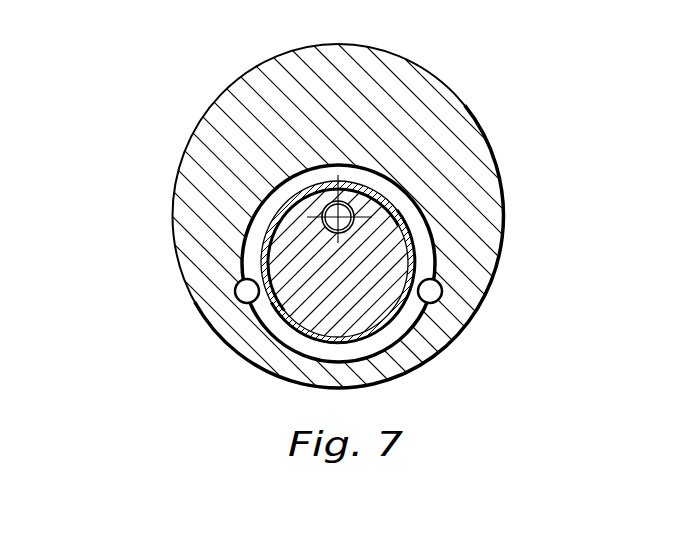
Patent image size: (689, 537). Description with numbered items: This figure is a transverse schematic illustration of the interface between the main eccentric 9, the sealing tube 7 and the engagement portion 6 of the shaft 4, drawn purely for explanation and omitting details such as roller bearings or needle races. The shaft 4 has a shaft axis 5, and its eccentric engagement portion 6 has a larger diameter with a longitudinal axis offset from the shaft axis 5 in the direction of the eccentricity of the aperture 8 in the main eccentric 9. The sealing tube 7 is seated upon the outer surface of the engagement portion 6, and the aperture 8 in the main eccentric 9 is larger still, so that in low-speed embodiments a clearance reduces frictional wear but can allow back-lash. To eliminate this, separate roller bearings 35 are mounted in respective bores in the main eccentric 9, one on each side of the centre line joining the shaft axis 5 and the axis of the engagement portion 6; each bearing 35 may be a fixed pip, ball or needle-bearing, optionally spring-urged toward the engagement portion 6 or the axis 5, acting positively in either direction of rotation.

The shaft 4 is at (354, 237).
The shaft axis 5 is at (351, 200).
The engagement portion 6 is at (368, 258).
The sealing tube 7 is at (396, 337).
The aperture 8 is at (312, 325).
The main eccentric 9 is at (213, 198).
The roller bearings 35 is at (237, 288).